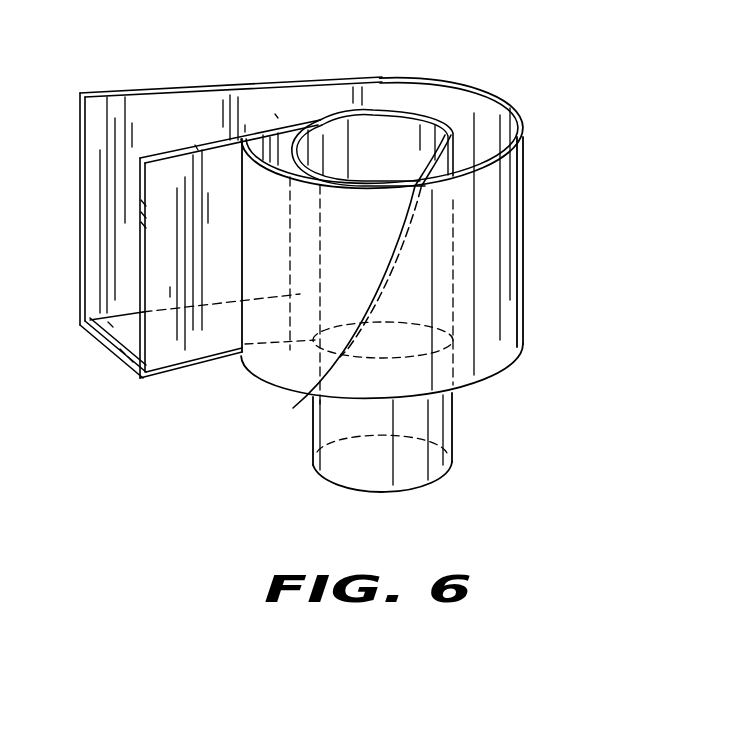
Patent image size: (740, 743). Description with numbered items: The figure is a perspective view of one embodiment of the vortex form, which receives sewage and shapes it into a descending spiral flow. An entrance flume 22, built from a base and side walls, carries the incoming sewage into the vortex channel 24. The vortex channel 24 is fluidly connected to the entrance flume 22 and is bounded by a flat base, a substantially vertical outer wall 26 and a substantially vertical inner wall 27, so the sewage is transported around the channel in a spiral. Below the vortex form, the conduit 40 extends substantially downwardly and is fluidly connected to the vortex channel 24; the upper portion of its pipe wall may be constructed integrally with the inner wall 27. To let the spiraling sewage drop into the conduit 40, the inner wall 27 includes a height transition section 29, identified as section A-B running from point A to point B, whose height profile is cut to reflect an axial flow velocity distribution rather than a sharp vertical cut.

The entrance flume 22 is at (188, 368).
The vortex channel 24 is at (488, 336).
The outer wall 26 is at (505, 115).
The inner wall 27 is at (441, 120).
The height transition section 29 is at (403, 256).
The conduit 40 is at (455, 428).
The start point of transition section A is at (440, 160).
The end point of transition section B is at (317, 392).